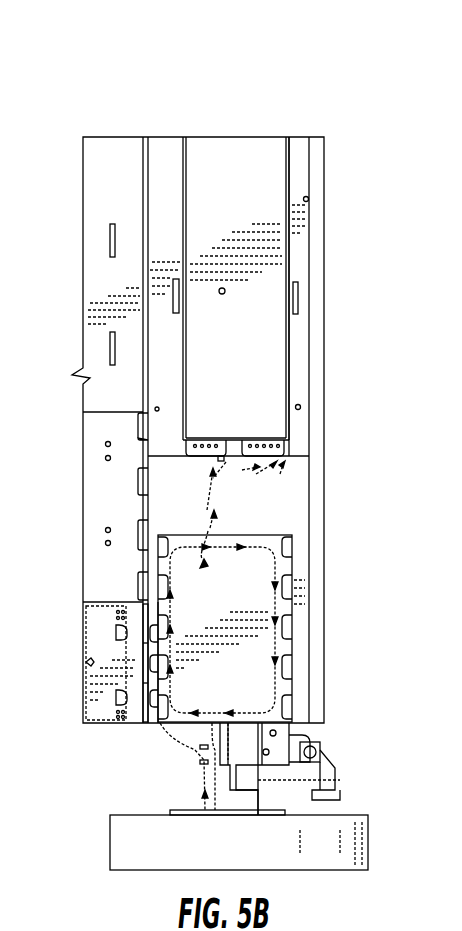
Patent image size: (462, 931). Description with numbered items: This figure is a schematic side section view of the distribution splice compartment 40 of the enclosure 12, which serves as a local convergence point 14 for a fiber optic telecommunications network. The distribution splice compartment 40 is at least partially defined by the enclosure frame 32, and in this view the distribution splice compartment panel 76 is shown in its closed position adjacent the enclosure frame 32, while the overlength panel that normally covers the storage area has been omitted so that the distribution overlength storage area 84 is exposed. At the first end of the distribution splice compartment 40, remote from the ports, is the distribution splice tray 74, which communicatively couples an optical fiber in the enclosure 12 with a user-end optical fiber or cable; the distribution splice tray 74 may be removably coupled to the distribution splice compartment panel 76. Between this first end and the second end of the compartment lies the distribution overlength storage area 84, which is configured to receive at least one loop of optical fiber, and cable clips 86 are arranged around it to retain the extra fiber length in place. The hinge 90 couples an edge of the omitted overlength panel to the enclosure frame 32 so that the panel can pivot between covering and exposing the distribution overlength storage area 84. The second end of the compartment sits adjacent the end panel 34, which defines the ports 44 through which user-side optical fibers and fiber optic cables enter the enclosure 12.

The enclosure 12 is at (118, 104).
The local convergence point 14 is at (268, 137).
The distribution splice tray 74 is at (272, 267).
The distribution splice compartment panel 76 is at (298, 343).
The distribution splice compartment 40 is at (176, 489).
The cable clip 86 is at (165, 586).
The distribution overlength storage area 84 is at (238, 595).
The enclosure frame 32 is at (262, 740).
The hinge 90 is at (146, 723).
The port 44 is at (208, 812).
The end panel 34 is at (343, 815).